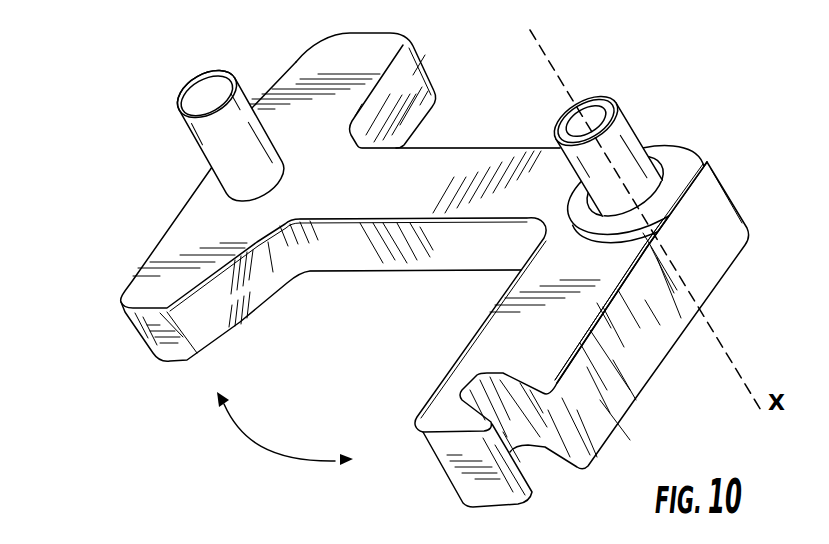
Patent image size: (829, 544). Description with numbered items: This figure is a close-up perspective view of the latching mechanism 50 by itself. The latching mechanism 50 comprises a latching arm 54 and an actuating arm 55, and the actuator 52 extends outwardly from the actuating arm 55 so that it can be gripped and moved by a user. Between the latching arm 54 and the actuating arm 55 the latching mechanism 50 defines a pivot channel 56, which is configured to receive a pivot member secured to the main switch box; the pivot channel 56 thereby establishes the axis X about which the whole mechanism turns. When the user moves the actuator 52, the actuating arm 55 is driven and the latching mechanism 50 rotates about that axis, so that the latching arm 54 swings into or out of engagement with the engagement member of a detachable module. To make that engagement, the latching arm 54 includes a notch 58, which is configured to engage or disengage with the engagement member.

The latching mechanism 50 is at (414, 232).
The actuator 52 is at (223, 138).
The latching arm 54 is at (650, 320).
The actuating arm 55 is at (462, 170).
The pivot channel 56 is at (592, 108).
The notch 58 is at (478, 391).